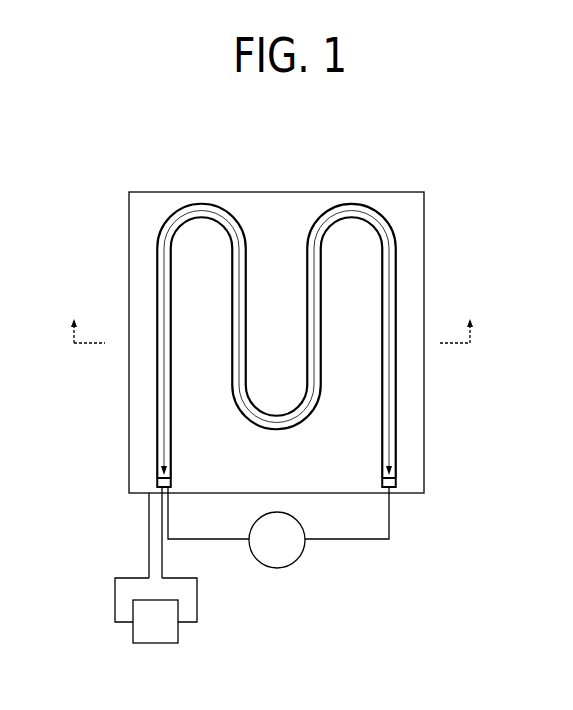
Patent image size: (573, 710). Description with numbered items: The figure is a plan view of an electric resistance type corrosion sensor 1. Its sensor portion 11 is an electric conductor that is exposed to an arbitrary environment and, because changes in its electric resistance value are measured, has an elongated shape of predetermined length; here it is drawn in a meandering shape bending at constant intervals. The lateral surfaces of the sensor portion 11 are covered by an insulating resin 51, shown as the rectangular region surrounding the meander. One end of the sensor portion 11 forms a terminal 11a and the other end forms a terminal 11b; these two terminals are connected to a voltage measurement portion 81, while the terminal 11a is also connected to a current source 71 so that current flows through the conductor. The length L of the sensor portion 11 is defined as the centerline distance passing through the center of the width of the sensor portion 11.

The corrosion sensor 1 is at (380, 156).
The sensor portion 11 is at (215, 201).
The terminal 11a is at (158, 473).
The terminal 11b is at (395, 465).
The insulating resin 51 is at (142, 228).
The length of flow channel L is at (390, 273).
The current source 71 is at (133, 628).
The voltage measurement portion 81 is at (297, 561).